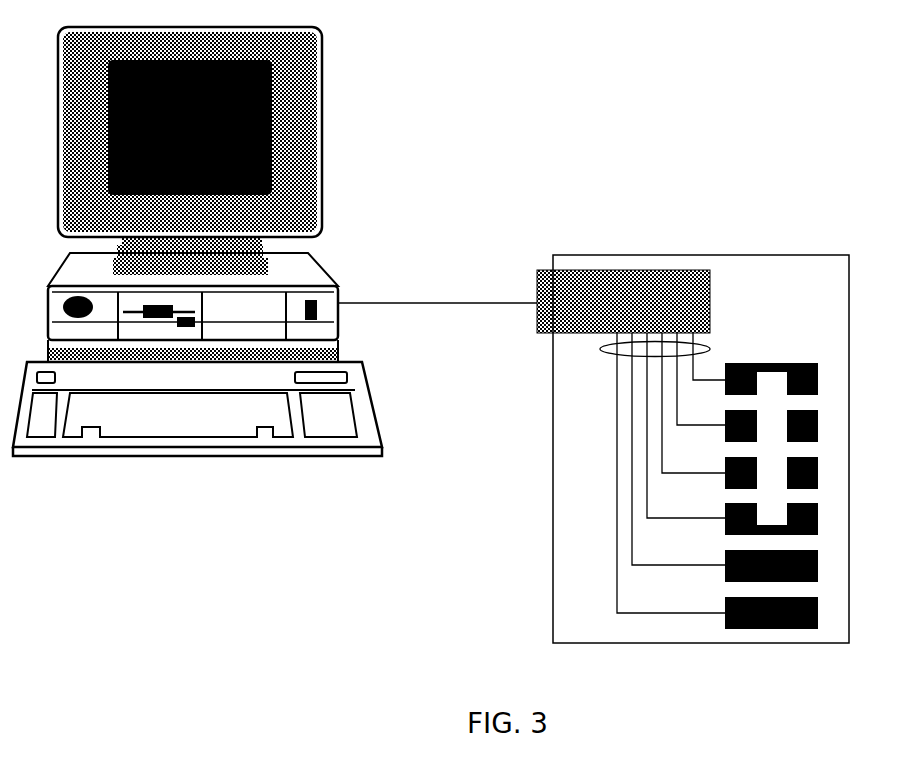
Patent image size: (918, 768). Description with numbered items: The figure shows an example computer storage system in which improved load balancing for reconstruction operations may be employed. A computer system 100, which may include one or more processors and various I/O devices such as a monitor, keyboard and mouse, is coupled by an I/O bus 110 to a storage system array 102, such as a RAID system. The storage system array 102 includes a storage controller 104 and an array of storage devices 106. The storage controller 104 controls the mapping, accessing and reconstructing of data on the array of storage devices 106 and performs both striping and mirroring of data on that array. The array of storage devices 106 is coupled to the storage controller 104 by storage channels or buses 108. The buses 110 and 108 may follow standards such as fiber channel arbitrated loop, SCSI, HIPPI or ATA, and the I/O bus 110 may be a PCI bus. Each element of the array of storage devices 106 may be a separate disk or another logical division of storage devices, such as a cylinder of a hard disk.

The computer system 100 is at (335, 225).
The storage system array 102 is at (788, 253).
The storage controller 104 is at (697, 298).
The array of storage devices 106 is at (827, 423).
The storage channels or buses 108 is at (608, 352).
The I/O bus 110 is at (467, 305).